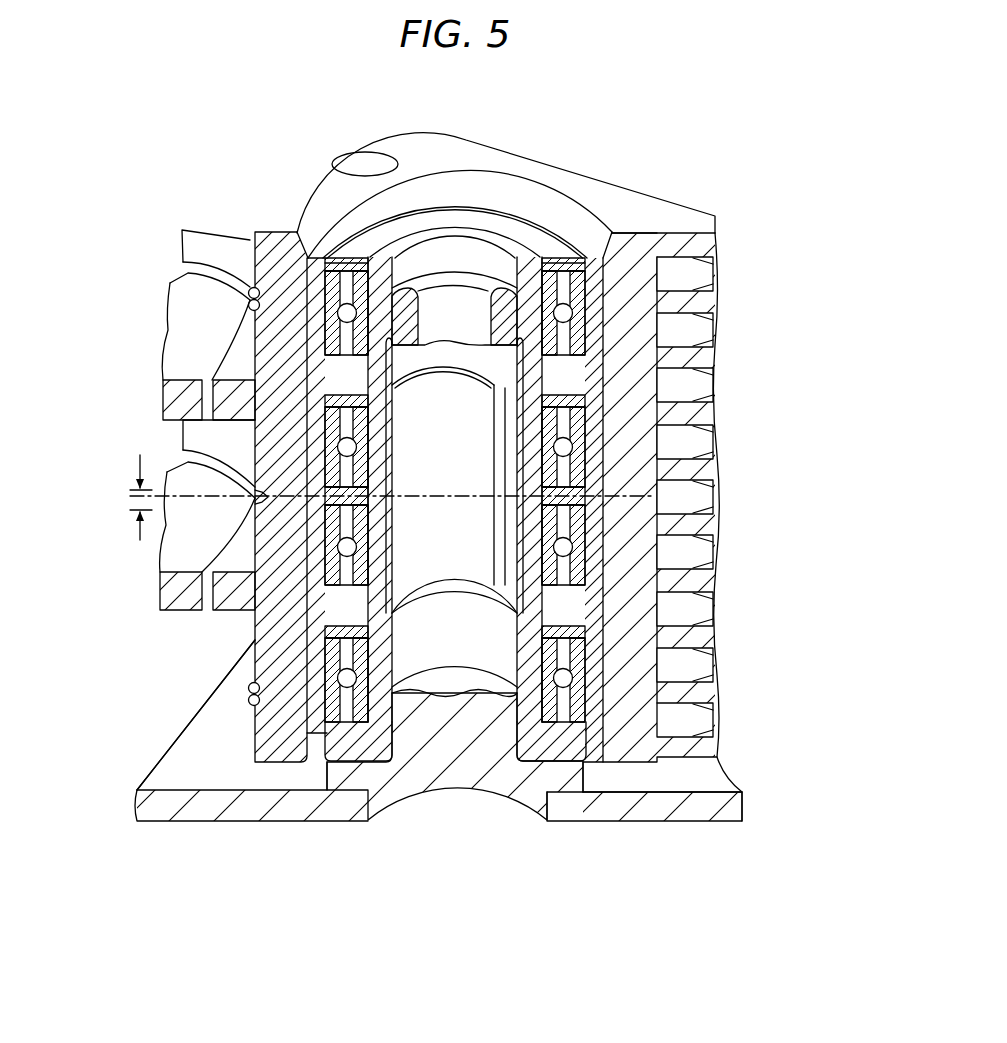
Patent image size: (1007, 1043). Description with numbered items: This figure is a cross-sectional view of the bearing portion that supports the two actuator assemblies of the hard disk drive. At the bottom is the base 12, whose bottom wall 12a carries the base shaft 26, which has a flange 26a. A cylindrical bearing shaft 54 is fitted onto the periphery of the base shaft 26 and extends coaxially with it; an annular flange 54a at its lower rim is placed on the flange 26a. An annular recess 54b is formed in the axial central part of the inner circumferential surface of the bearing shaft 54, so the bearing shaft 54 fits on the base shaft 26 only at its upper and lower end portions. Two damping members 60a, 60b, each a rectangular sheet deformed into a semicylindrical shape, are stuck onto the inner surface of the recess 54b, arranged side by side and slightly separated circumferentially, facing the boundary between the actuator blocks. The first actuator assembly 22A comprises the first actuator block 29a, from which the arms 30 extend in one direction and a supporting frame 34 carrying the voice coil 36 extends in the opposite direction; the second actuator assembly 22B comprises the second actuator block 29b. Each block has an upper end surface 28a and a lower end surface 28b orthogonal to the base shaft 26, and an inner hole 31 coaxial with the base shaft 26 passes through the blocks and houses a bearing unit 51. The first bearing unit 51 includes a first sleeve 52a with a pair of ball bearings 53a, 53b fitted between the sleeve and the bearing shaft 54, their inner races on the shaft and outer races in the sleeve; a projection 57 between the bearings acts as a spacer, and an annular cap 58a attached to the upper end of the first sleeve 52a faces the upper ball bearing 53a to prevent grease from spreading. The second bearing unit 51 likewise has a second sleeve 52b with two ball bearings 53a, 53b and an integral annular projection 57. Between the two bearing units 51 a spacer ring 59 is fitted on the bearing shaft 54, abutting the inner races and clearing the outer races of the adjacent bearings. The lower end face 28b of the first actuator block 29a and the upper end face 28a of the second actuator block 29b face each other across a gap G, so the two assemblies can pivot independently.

The base 12 is at (183, 834).
The bottom wall 12a is at (677, 813).
The first actuator assembly 22A is at (713, 194).
The second actuator assembly 22B is at (717, 770).
The base shaft 26 is at (460, 722).
The flange 26a is at (570, 775).
The upper end surface 28a is at (441, 143).
The lower end surface 28b is at (268, 499).
The first actuator block 29a is at (296, 230).
The second actuator block 29b is at (263, 735).
The arms 30 is at (705, 300).
The inner hole 31 is at (600, 342).
The supporting frame 34 is at (207, 225).
The voice coil 36 is at (187, 291).
The bearing unit 51 is at (610, 305).
The first sleeve 52a is at (313, 347).
The second sleeve 52b is at (290, 683).
The ball bearing 53a is at (588, 265).
The ball bearing 53b is at (587, 433).
The bearing shaft 54 is at (538, 253).
The flange 54a is at (550, 747).
The recess 54b is at (385, 357).
The projection 57 is at (372, 390).
The cap 58a is at (351, 258).
The spacer ring 59 is at (363, 498).
The damping member 60a is at (442, 563).
The damping member 60b is at (505, 585).
The gap G is at (385, 497).